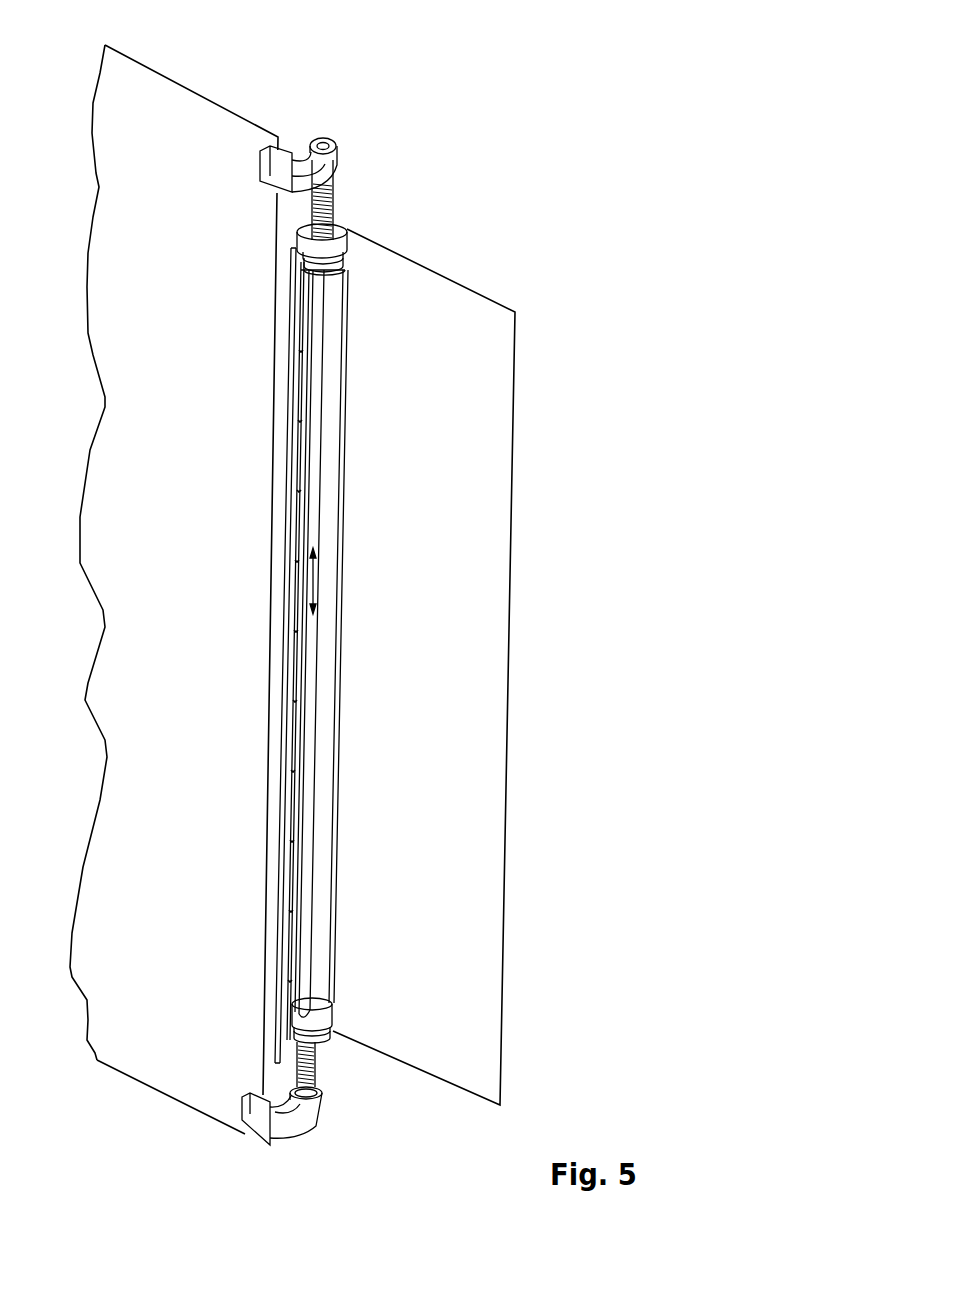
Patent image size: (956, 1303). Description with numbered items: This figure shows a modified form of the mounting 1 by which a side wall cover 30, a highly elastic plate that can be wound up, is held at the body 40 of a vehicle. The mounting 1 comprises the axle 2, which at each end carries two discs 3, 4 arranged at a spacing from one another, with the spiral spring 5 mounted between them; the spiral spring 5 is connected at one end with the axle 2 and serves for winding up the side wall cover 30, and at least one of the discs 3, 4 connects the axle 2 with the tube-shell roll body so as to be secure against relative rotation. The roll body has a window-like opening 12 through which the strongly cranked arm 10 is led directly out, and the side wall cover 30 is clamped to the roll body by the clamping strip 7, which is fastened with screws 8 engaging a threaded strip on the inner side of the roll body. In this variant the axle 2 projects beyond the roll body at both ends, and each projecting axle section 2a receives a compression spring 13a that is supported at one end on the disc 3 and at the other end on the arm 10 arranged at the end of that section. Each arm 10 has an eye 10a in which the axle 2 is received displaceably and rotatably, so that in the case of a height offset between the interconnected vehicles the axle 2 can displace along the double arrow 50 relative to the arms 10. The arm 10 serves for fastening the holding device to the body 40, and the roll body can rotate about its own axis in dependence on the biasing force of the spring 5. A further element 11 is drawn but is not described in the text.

The body 40 is at (146, 82).
The side wall cover 30 is at (473, 310).
The mounting tab 11 is at (269, 165).
The eye 10a is at (281, 172).
The projecting axle section 2a is at (323, 144).
The compression spring 13a is at (334, 215).
The disc 3 is at (306, 233).
The spiral spring 5 is at (344, 258).
The disc 4 is at (348, 268).
The mounting 1 is at (343, 226).
The clamping strip 7 is at (288, 488).
The screws 8 is at (290, 582).
The arm 10 is at (303, 930).
The axle 2 is at (311, 703).
The window-like opening 12 is at (344, 518).
The double arrow 50 is at (311, 583).